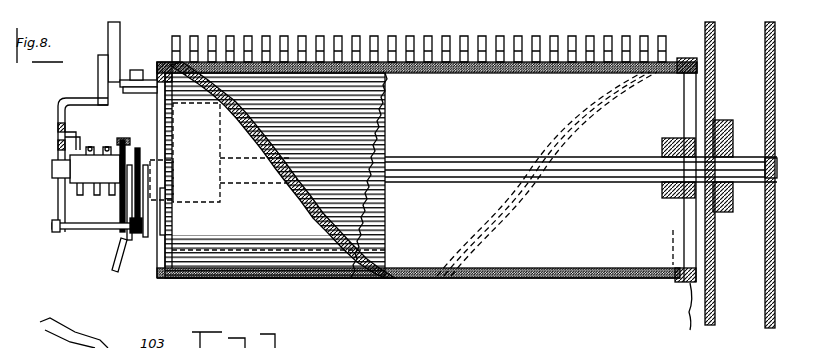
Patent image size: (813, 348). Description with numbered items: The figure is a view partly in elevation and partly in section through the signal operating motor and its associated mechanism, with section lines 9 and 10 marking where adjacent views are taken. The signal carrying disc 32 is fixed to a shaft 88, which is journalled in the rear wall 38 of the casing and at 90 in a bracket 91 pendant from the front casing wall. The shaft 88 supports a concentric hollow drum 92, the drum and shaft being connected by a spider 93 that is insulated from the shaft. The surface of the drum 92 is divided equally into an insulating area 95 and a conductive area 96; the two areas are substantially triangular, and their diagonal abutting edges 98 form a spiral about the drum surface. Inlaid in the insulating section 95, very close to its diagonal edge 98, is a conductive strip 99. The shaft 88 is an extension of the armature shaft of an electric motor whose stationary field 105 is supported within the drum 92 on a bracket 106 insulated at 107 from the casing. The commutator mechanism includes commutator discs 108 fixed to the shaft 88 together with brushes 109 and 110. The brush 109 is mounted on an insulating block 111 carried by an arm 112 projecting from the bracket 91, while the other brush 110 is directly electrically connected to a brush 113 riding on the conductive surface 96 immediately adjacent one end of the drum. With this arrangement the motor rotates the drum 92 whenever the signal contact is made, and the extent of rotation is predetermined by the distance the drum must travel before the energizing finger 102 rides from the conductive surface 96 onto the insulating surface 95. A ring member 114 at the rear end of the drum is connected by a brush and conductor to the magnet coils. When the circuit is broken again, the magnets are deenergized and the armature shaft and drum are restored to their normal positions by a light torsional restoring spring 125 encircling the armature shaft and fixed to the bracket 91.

The section line 9- 9 is at (167, 270).
The section line 10- 10 is at (678, 270).
The signal bearing disc 32 is at (715, 64).
The rear wall 38 is at (775, 106).
The shaft 88 is at (490, 157).
The journal 90 is at (58, 183).
The bracket 91 is at (58, 207).
The hollow drum 92 is at (483, 74).
The spider 93 is at (692, 107).
The insulating area 95 is at (384, 115).
The conductive area 96 is at (276, 280).
The diagonal abutting edges 98 is at (347, 253).
The conductive strip 99 is at (282, 180).
The energizing finger 102 is at (297, 37).
The stationary field 105 is at (215, 130).
The bracket 106 is at (156, 92).
The insulation 107 is at (126, 69).
The commutator discs 108 is at (137, 150).
The brush 109 is at (130, 208).
The brush 110 is at (143, 180).
The insulating block 111 is at (128, 250).
The arm 112 is at (67, 234).
The brush 113 is at (168, 221).
The ring member 114 is at (700, 314).
The torsional restoring spring 125 is at (90, 146).